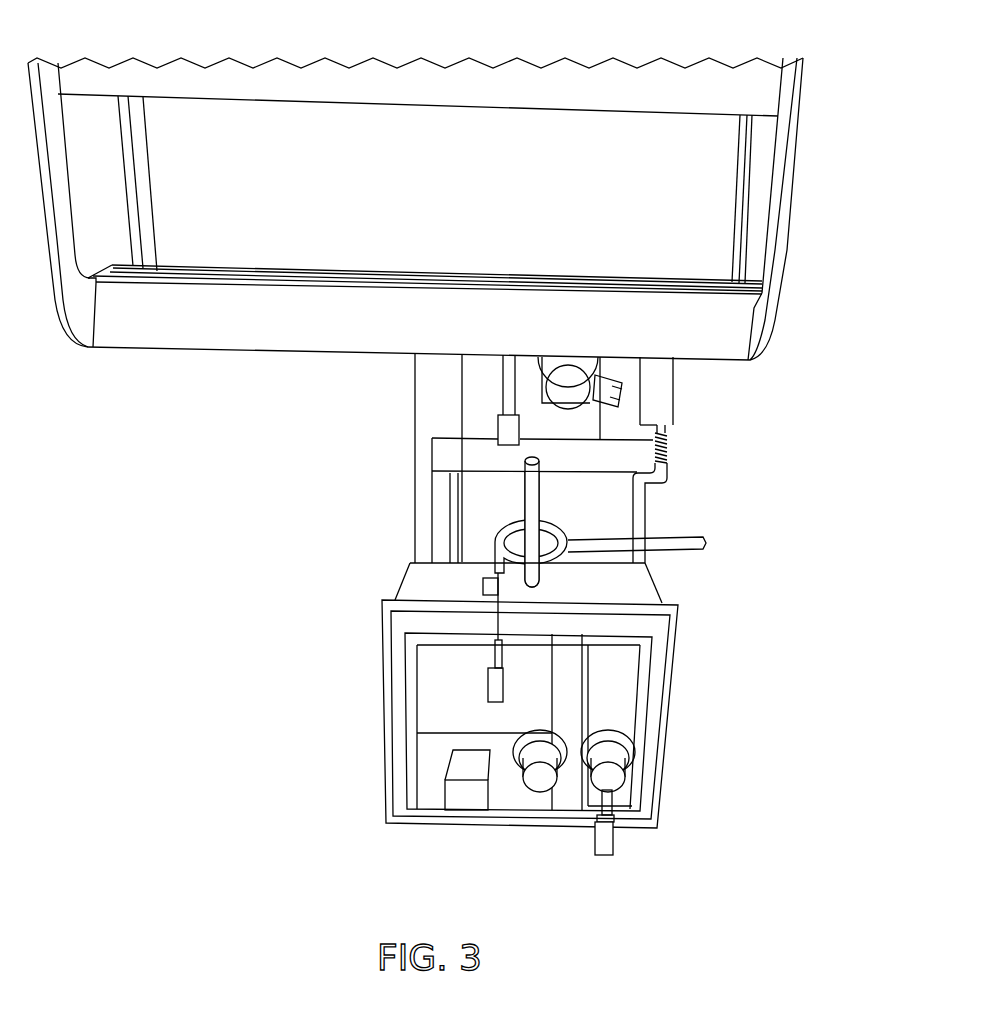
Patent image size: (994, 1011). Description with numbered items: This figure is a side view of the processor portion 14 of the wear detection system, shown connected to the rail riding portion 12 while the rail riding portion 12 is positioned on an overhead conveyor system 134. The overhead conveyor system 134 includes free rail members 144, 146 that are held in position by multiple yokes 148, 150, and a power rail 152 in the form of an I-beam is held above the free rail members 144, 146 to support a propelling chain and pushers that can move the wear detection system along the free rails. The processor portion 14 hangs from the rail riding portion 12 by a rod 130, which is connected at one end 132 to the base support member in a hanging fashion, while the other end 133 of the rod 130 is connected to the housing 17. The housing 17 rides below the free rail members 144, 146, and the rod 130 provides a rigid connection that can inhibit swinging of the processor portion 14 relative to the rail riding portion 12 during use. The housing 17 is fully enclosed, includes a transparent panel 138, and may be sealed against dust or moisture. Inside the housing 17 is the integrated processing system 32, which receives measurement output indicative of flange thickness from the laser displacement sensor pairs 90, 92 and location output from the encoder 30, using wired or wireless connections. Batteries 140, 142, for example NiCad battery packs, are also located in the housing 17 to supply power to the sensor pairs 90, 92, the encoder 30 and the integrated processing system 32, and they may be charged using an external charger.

The overhead conveyor system 134 is at (445, 192).
The yoke 150 is at (143, 192).
The power rail 152 is at (463, 116).
The free rail member 146 is at (552, 260).
The free rail member 144 is at (667, 262).
The yoke 148 is at (767, 287).
The encoder 30 is at (612, 348).
The rail riding portion 12 is at (502, 431).
The laser displacement sensor pair 90 is at (489, 495).
The laser displacement sensor pair 92 is at (484, 430).
The end of rod 132 is at (528, 480).
The rod 130 is at (535, 522).
The other end of rod 133 is at (537, 585).
The processor portion 14 is at (472, 712).
The integrated processing system 32 is at (432, 683).
The housing 17 is at (397, 740).
The transparent panel 138 is at (466, 803).
The battery 140 is at (537, 785).
The battery 142 is at (600, 788).